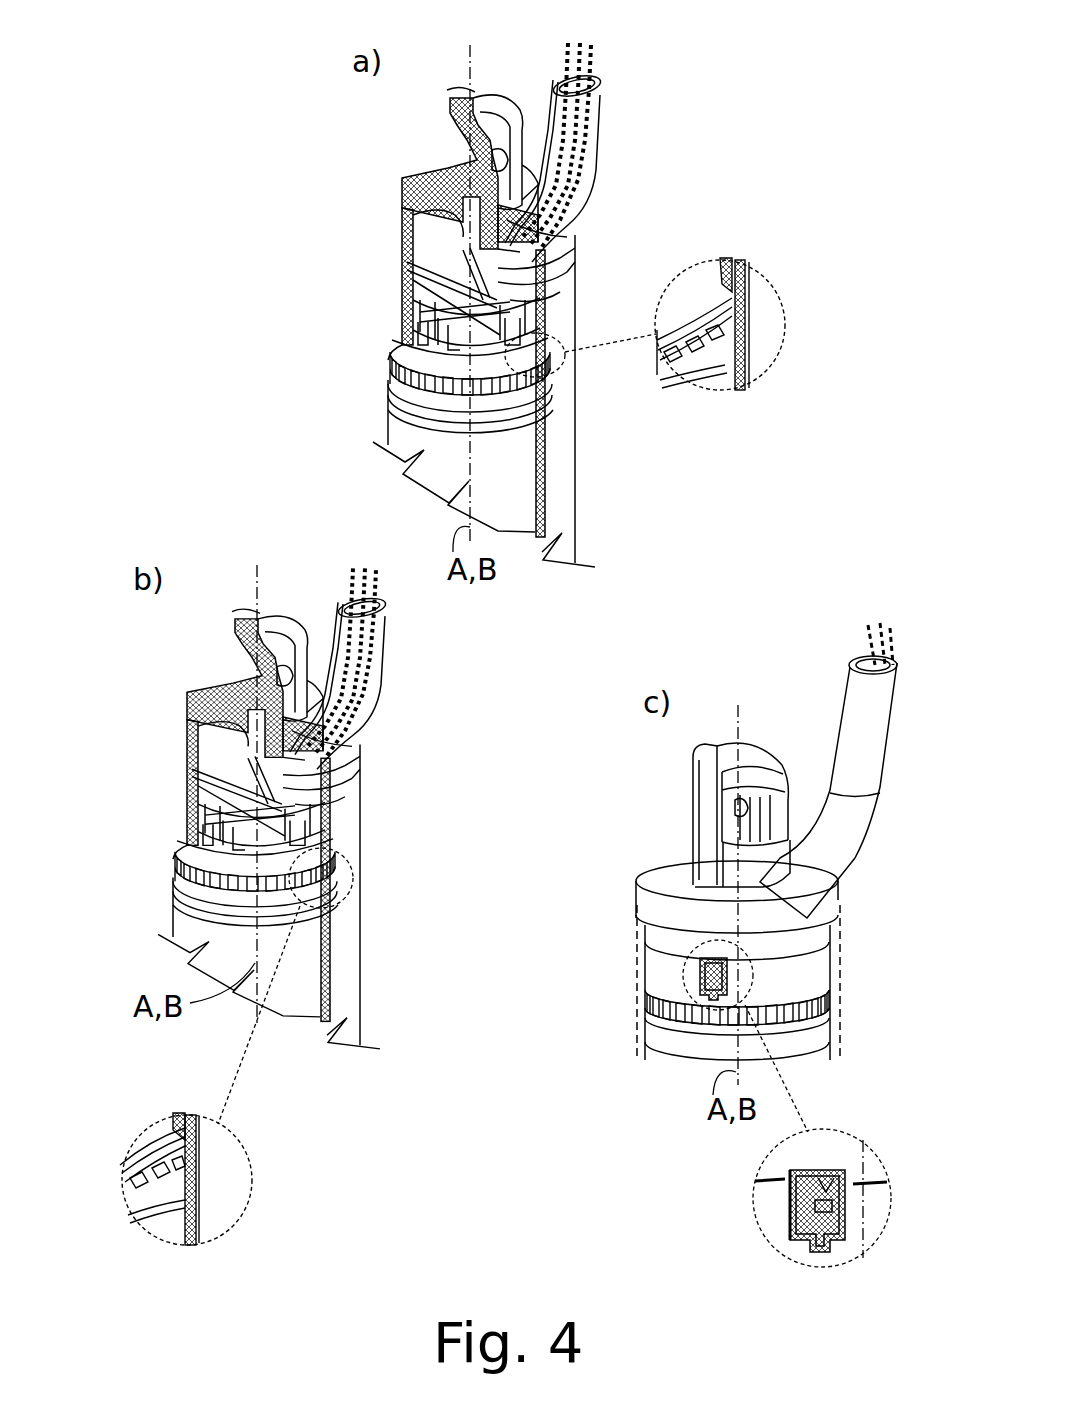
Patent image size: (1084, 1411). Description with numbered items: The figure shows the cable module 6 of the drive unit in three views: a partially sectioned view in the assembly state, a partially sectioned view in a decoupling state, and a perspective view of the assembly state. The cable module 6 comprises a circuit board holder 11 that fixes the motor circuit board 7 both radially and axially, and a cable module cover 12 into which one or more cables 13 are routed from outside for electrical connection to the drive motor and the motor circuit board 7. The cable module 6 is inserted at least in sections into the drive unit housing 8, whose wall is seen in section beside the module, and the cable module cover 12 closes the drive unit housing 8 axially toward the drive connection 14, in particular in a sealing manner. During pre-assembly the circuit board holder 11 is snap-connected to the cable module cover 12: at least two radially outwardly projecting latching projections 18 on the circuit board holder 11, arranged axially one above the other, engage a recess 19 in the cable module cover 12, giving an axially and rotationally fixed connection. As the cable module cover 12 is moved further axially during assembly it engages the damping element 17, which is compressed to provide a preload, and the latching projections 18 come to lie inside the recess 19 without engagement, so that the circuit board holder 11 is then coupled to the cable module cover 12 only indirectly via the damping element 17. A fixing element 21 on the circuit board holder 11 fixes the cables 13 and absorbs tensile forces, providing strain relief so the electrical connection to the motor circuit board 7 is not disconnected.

The cable module 6 is at (348, 160).
The motor circuit board 7 is at (463, 335).
The drive unit housing 8 is at (557, 490).
The circuit board holder 11 is at (523, 413).
The cable module cover 12 is at (440, 173).
The cables 13 is at (500, 290).
The drive connection 14 is at (508, 115).
The damping element 17 is at (397, 378).
The latching projections 18 is at (402, 350).
The recess 19 is at (798, 1210).
The fixing element 21 is at (540, 312).